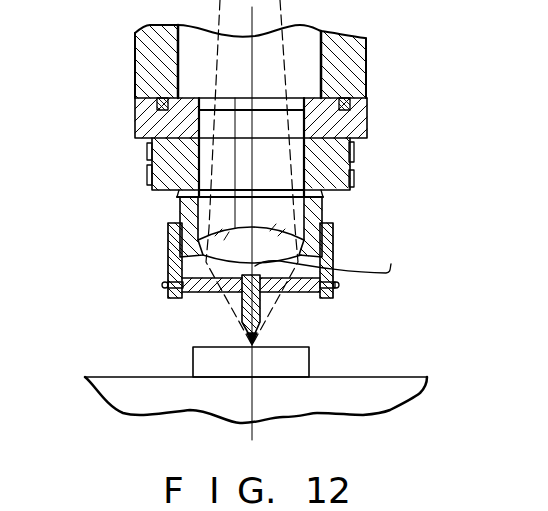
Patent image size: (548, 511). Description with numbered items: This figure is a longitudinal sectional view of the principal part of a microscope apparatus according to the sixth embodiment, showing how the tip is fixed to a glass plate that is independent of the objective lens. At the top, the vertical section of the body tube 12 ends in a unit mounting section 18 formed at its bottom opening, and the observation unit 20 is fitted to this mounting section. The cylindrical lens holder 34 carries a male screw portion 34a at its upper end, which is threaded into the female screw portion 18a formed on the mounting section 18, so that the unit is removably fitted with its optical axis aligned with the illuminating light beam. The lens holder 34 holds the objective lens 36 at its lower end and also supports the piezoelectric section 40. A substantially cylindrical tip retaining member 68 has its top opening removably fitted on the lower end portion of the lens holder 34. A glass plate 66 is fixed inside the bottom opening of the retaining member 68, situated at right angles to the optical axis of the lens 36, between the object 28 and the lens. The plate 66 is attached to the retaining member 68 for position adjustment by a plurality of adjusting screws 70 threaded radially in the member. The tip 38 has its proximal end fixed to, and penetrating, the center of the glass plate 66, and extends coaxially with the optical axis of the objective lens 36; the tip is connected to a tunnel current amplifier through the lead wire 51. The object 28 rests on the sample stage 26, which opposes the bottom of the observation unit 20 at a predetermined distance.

The body tube 12 is at (133, 58).
The unit mounting section 18 is at (348, 79).
The female screw portion 18a is at (158, 99).
The male screw portion 34a is at (358, 98).
The observation unit 20 is at (124, 210).
The piezoelectric section 40 is at (361, 165).
The lens holder 34 is at (323, 198).
The objective lens 36 is at (283, 257).
The tip retaining member 68 is at (168, 262).
The adjusting screws 70 is at (163, 285).
The glass plate 66 is at (212, 292).
The tip 38 is at (265, 313).
The lead wire 51 is at (368, 278).
The object 28 is at (308, 362).
The sample stage 26 is at (383, 398).